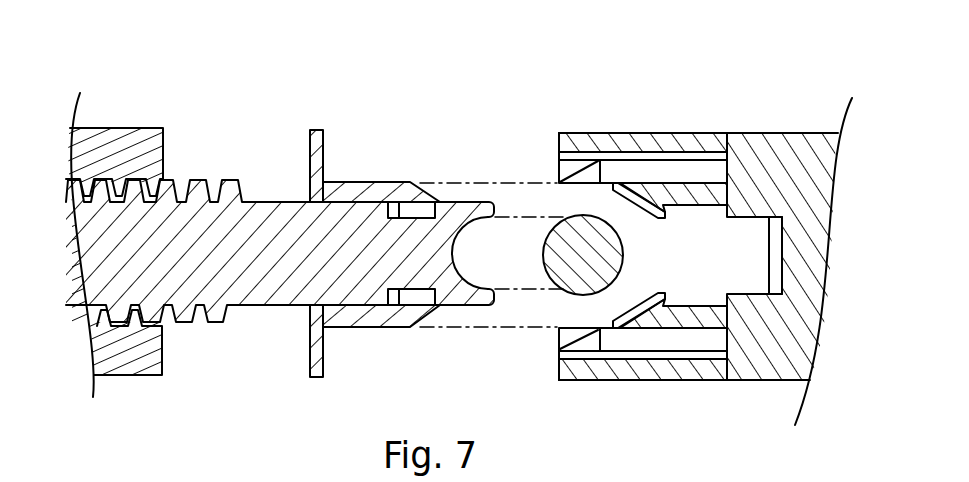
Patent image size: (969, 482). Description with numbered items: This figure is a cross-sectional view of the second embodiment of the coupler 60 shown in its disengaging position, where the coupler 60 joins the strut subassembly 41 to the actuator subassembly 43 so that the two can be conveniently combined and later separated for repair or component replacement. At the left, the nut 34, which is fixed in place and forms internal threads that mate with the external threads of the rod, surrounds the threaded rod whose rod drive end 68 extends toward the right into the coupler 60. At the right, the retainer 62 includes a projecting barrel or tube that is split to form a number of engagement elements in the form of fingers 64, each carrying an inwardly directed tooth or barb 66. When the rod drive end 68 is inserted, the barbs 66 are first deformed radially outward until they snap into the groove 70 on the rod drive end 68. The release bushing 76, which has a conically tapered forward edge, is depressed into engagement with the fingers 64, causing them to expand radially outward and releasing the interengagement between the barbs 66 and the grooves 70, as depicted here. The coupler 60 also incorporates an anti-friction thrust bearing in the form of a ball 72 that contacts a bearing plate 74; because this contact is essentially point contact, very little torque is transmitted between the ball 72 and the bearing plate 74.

The nut 34 is at (135, 128).
The strut subassembly 41 is at (280, 198).
The actuator subassembly 43 is at (591, 410).
The coupler 60 is at (697, 219).
The retainer 62 is at (735, 133).
The fingers 64 is at (635, 185).
The barbs 66 is at (560, 318).
The rod drive end 68 is at (457, 297).
The groove 70 is at (416, 297).
The ball 72 is at (577, 235).
The bearing plate 74 is at (773, 290).
The release bushing 76 is at (380, 182).